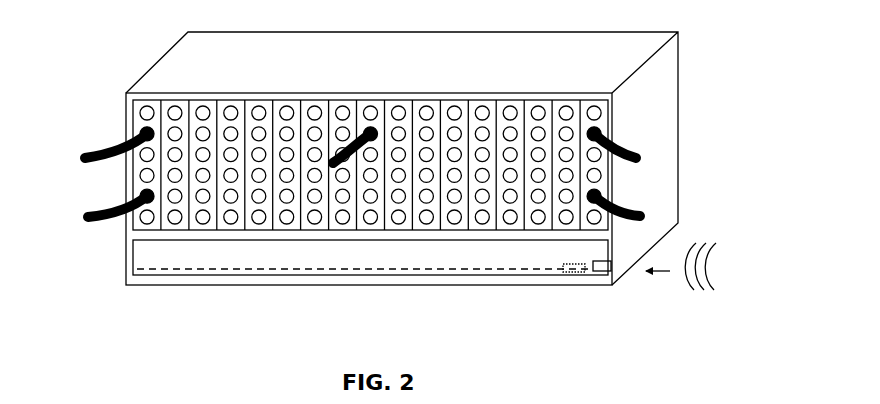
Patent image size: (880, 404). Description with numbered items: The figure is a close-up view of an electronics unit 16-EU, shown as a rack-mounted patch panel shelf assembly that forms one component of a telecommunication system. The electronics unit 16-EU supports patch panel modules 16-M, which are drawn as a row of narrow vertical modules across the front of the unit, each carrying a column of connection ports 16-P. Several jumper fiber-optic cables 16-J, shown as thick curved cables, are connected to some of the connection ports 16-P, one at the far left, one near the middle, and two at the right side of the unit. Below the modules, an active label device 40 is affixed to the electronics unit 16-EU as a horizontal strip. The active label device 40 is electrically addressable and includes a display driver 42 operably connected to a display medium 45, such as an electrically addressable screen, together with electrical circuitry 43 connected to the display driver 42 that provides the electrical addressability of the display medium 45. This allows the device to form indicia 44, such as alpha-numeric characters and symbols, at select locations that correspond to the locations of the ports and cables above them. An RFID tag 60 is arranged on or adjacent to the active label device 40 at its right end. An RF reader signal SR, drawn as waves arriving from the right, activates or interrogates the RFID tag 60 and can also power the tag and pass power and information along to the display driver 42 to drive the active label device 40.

The electronics unit 16-EU is at (650, 92).
The patch panel module 16-M is at (138, 128).
The connection port 16-P is at (175, 127).
The jumper fiber-optic cable 16-J is at (116, 204).
The active label device 40 is at (471, 280).
The display driver 42 is at (573, 273).
The electrical circuitry 43 is at (378, 269).
The indicia 44 is at (181, 272).
The display medium 45 is at (275, 265).
The RFID tag 60 is at (603, 273).
The RF reader signal SR is at (702, 305).